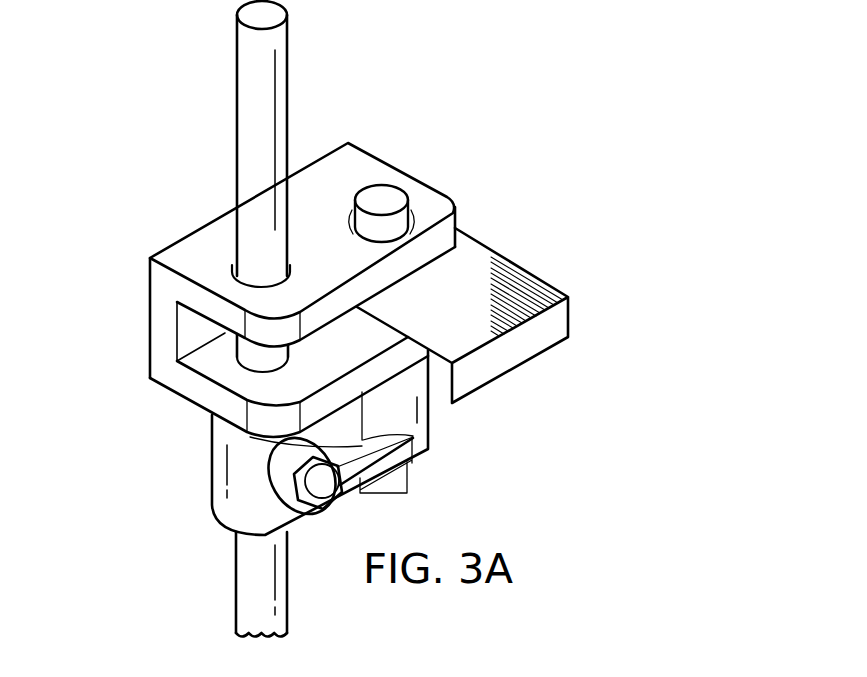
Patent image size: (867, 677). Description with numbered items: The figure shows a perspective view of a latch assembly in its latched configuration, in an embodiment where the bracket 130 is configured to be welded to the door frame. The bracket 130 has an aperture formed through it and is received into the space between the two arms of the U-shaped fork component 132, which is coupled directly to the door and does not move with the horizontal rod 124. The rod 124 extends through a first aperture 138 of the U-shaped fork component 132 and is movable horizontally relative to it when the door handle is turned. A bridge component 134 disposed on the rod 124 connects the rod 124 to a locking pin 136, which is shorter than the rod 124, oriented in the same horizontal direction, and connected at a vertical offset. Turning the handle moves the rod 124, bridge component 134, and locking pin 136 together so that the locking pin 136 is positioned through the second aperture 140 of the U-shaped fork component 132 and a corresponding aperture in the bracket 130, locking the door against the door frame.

The rod 124 is at (237, 116).
The bracket 130 is at (541, 279).
The U-shaped fork component 132 is at (197, 230).
The bridge component 134 is at (212, 477).
The locking pin 136 is at (390, 198).
The first aperture 138 is at (230, 291).
The second aperture 140 is at (417, 226).